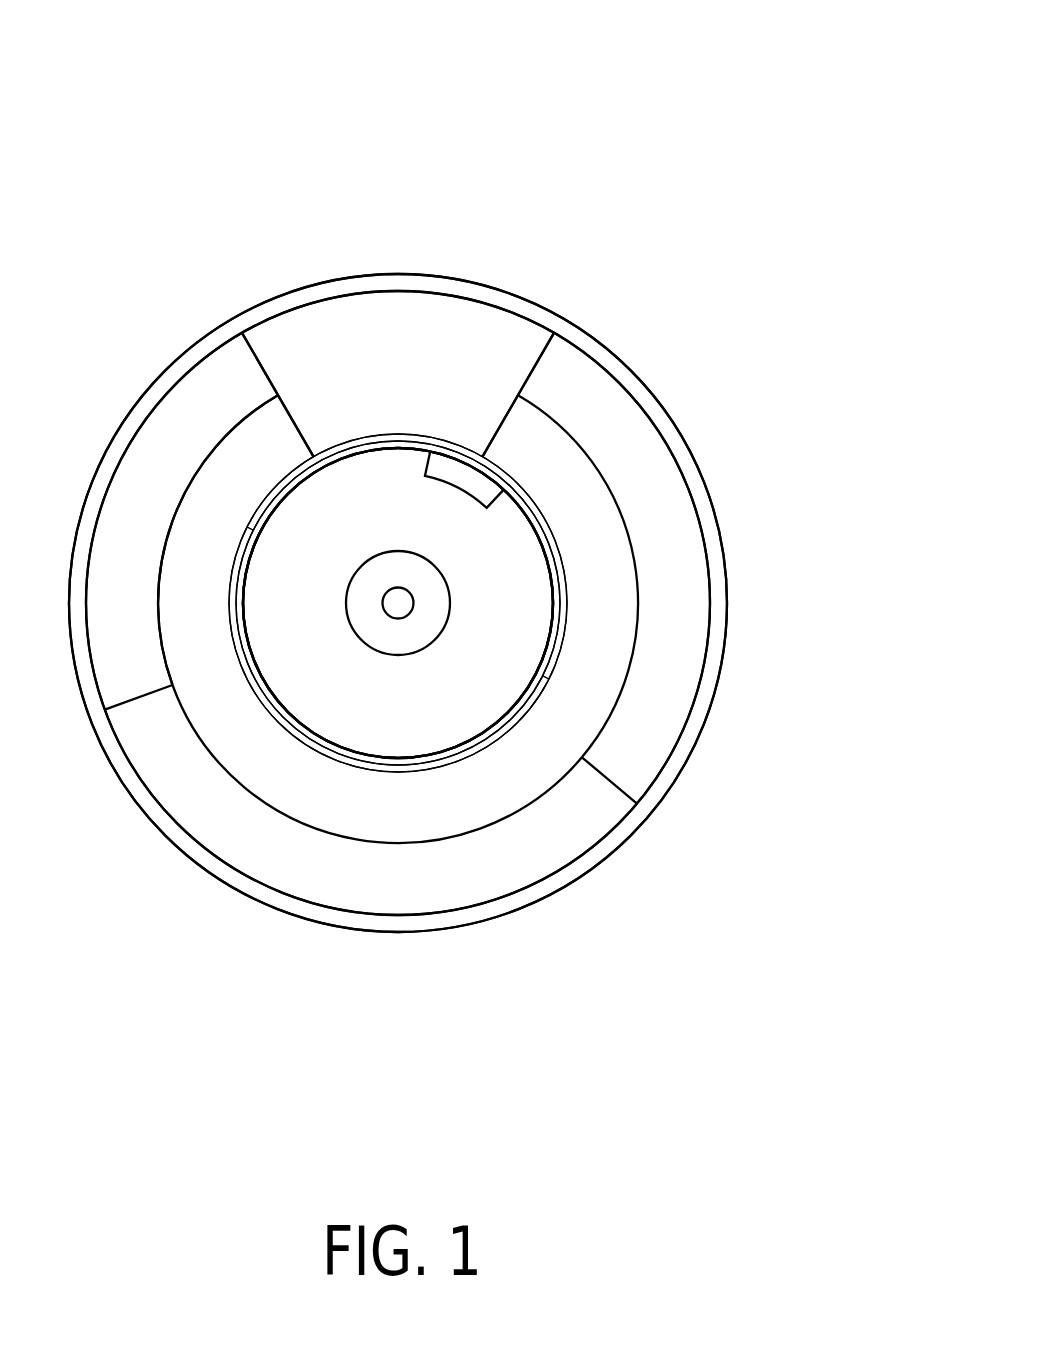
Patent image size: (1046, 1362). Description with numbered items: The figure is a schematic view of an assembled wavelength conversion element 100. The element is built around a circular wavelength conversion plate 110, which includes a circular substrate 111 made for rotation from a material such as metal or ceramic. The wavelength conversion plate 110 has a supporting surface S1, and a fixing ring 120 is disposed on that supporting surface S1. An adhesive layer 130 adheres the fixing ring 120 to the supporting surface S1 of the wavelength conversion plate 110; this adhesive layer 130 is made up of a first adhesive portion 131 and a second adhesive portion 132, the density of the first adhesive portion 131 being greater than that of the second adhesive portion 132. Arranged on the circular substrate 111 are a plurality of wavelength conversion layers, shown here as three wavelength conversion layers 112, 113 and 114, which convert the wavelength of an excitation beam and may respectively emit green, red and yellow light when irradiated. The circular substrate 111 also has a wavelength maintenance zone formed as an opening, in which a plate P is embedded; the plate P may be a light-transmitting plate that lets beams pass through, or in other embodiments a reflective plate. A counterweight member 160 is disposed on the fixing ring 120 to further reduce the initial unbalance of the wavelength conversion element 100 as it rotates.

The wavelength conversion element 100 is at (98, 46).
The wavelength conversion plate 110 is at (670, 788).
The circular substrate 111 is at (623, 828).
The wavelength conversion layer 112 is at (191, 407).
The wavelength conversion layer 113 is at (503, 862).
The wavelength conversion layer 114 is at (678, 625).
The fixing ring 120 is at (502, 533).
The adhesive layer 130 is at (818, 693).
The first adhesive portion 131 is at (570, 622).
The second adhesive portion 132 is at (540, 698).
The counterweight member 160 is at (453, 473).
The plate P is at (380, 333).
The supporting surface S1 is at (187, 598).